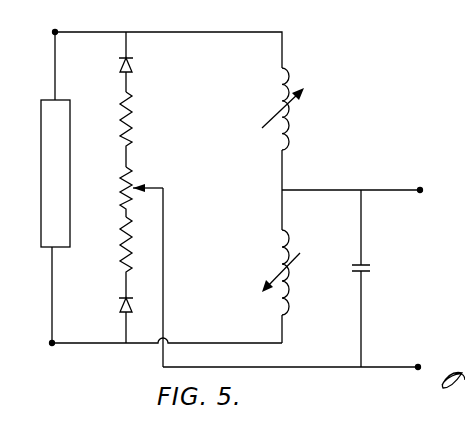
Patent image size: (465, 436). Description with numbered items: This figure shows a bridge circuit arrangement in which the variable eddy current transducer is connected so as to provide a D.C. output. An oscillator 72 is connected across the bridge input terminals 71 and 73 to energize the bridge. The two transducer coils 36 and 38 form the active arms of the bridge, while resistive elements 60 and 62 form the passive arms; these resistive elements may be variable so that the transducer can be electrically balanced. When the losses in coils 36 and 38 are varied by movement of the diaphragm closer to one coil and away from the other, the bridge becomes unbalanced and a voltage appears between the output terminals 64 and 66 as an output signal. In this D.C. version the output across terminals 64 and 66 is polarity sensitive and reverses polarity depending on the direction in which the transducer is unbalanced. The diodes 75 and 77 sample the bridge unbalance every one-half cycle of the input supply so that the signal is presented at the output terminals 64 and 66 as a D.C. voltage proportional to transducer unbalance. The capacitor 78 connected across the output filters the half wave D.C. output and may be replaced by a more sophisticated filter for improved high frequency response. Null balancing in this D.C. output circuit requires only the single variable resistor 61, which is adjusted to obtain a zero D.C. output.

The bridge input terminal 71 is at (61, 23).
The oscillator 72 is at (77, 91).
The bridge input terminal 73 is at (52, 346).
The diode 75 is at (132, 64).
The resistive element 60 is at (134, 128).
The variable resistor 61 is at (124, 184).
The resistive element 62 is at (120, 258).
The diode 77 is at (118, 304).
The transducer coil 36 is at (296, 126).
The transducer coil 38 is at (292, 296).
The output terminal 64 is at (421, 188).
The output terminal 66 is at (418, 365).
The capacitor 78 is at (372, 265).